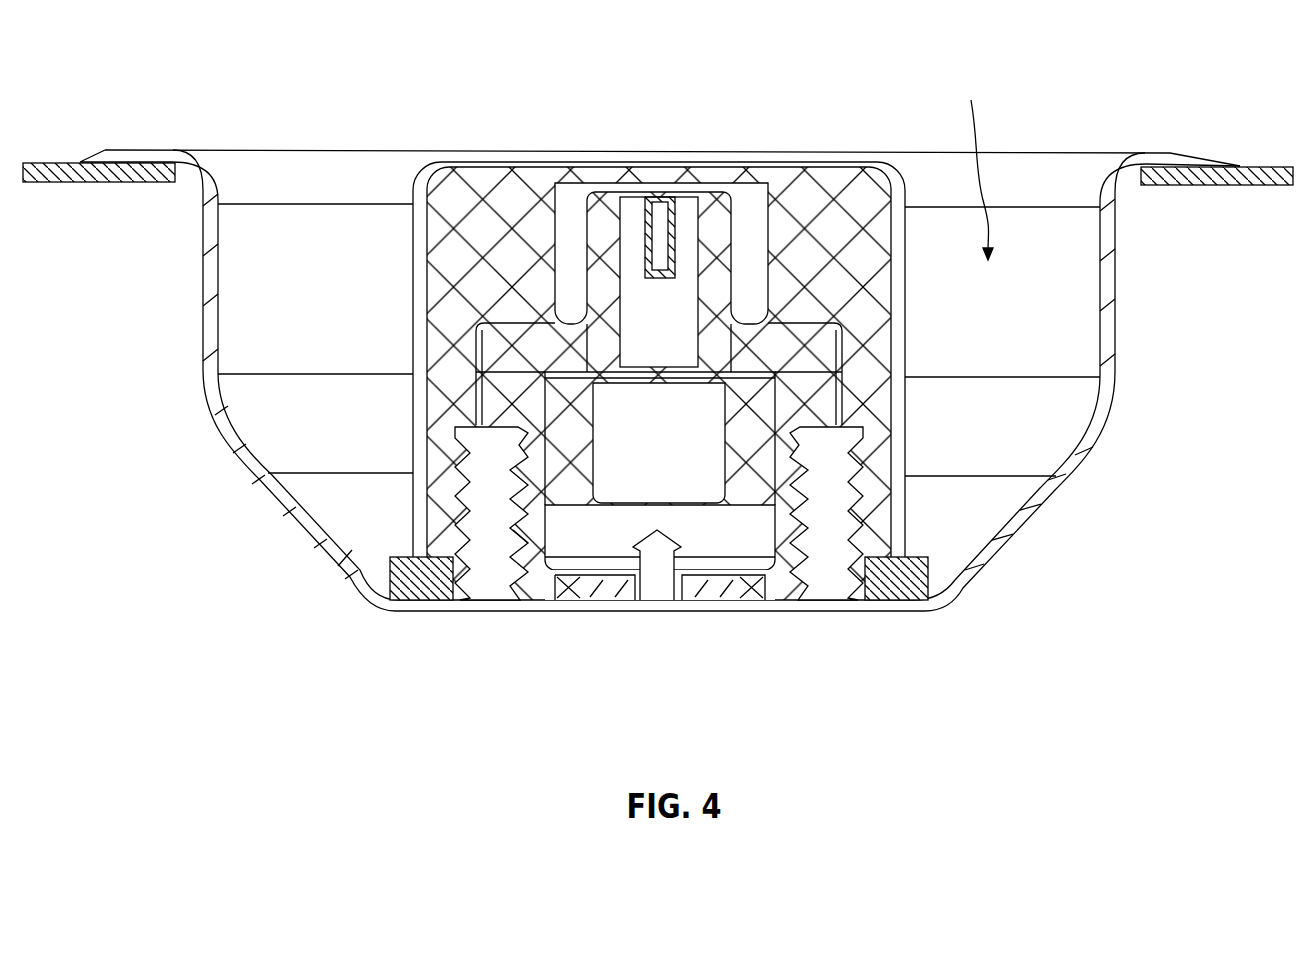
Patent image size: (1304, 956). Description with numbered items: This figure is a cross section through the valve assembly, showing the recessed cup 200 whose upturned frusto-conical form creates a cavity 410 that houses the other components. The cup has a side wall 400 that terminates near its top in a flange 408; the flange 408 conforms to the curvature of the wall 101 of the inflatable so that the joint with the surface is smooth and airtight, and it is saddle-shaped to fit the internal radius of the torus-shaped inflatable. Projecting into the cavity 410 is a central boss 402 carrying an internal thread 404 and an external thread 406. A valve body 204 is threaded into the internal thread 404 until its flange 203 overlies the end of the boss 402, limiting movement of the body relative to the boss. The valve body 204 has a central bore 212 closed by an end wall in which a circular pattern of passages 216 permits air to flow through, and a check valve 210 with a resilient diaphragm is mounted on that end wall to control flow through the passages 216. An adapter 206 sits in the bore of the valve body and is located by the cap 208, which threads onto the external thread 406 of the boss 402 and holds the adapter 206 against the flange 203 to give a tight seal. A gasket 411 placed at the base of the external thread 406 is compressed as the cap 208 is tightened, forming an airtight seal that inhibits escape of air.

The wall 101 is at (60, 163).
The flange 408 is at (1192, 164).
The recessed cup 200 is at (1083, 474).
The side wall 400 is at (1102, 368).
The cap 208 is at (727, 165).
The adapter 206 is at (497, 353).
The valve body 204 is at (803, 415).
The check valve 210 is at (655, 583).
The central bore 212 is at (597, 583).
The passages 216 is at (733, 583).
The external thread 406 is at (503, 407).
The central boss 402 is at (793, 450).
The gasket 411 is at (387, 596).
The flange 203 is at (552, 412).
The internal thread 404 is at (513, 530).
The cavity 410 is at (969, 168).